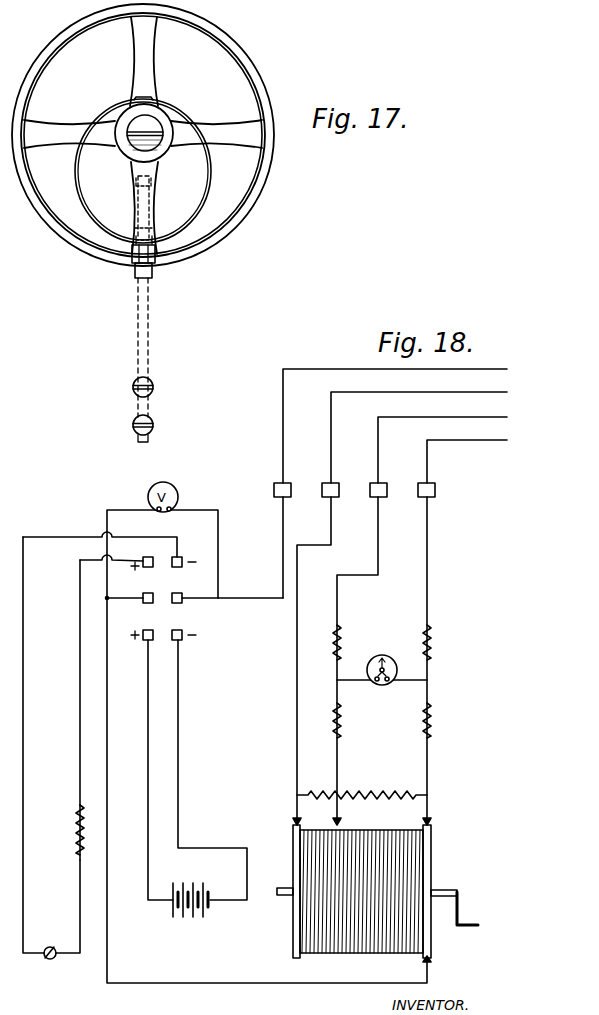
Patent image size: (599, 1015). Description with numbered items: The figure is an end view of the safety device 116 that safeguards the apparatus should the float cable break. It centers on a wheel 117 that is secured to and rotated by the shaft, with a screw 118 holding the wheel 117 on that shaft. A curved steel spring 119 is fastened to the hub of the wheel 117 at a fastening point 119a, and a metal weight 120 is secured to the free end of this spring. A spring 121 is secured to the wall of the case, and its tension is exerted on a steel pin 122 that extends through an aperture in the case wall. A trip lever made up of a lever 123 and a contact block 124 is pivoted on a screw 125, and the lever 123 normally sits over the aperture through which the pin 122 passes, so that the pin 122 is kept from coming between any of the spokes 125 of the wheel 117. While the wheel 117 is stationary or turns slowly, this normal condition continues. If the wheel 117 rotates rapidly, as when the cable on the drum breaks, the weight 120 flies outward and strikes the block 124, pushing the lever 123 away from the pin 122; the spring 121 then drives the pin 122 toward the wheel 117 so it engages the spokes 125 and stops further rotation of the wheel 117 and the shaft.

The safety device 116 is at (143, 135).
The wheel 117 is at (90, 250).
The screw 118 is at (163, 140).
The curved steel spring 119 is at (85, 192).
The fastening point of spring 119a is at (145, 99).
The metal weight 120 is at (157, 258).
The spring 121 is at (143, 338).
The steel pin 122 is at (148, 231).
The lever 123 is at (143, 218).
The contact block 124 is at (135, 273).
The screw 125 is at (148, 193).